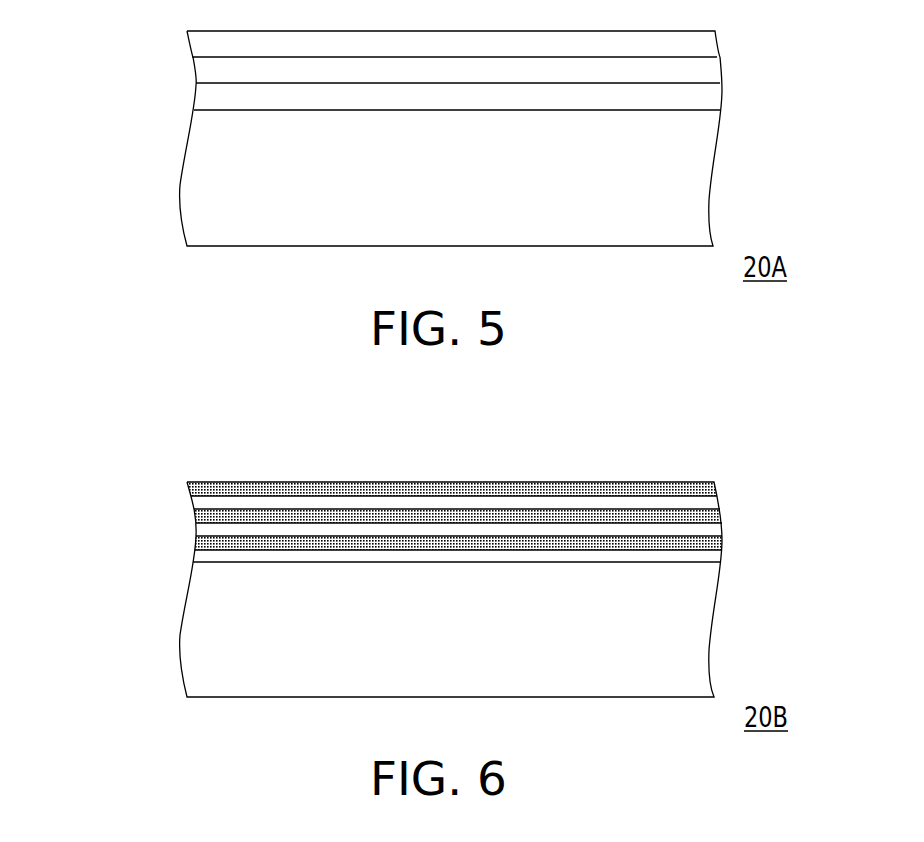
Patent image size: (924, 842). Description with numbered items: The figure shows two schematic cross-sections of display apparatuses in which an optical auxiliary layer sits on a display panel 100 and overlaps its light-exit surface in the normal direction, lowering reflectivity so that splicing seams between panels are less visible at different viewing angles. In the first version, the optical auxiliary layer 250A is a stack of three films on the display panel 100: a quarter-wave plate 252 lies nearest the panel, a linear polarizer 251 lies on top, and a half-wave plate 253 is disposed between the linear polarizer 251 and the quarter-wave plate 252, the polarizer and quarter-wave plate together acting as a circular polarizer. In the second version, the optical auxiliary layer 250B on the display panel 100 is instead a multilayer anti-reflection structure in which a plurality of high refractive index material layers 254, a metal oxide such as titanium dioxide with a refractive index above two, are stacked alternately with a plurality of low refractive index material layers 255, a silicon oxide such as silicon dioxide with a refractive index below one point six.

In FIG. 5, the display panel 100 is at (703, 167).
In FIG. 6, the display panel 100 is at (703, 617).
In FIG. 5, the linear polarizer 251 is at (703, 41).
In FIG. 5, the half-wave plate 253 is at (703, 70).
In FIG. 5, the quarter-wave plate 252 is at (703, 100).
In FIG. 5, the optical auxiliary layer 250A is at (792, 24).
In FIG. 6, the optical auxiliary layer 250B is at (730, 483).
In FIG. 6, the high refractive index material layer 254 is at (412, 540).
In FIG. 6, the low refractive index material layer 255 is at (561, 557).